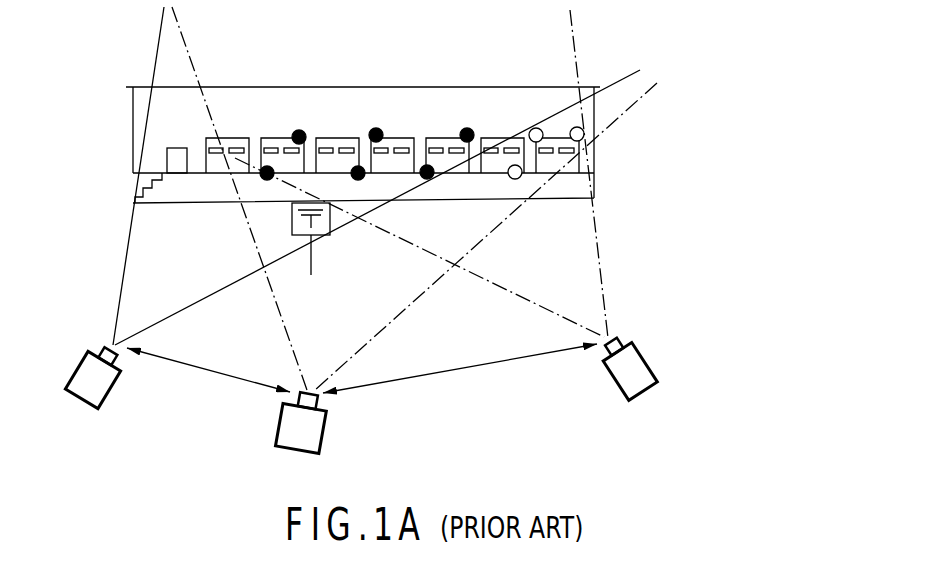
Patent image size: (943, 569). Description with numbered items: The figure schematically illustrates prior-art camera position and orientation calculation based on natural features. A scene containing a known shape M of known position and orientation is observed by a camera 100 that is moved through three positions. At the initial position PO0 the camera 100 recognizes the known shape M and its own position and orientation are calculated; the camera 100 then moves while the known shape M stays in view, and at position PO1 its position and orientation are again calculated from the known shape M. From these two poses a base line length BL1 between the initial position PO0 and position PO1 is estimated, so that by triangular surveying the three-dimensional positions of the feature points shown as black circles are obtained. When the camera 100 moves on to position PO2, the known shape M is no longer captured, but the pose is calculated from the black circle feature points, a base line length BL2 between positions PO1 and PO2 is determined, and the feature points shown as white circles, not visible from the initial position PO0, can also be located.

The camera 100 is at (82, 371).
The known shape M is at (292, 223).
The initial position PO0 is at (53, 335).
The position PO1 is at (319, 422).
The position PO2 is at (635, 379).
The base line length BL1 is at (208, 362).
The base line length BL2 is at (460, 360).